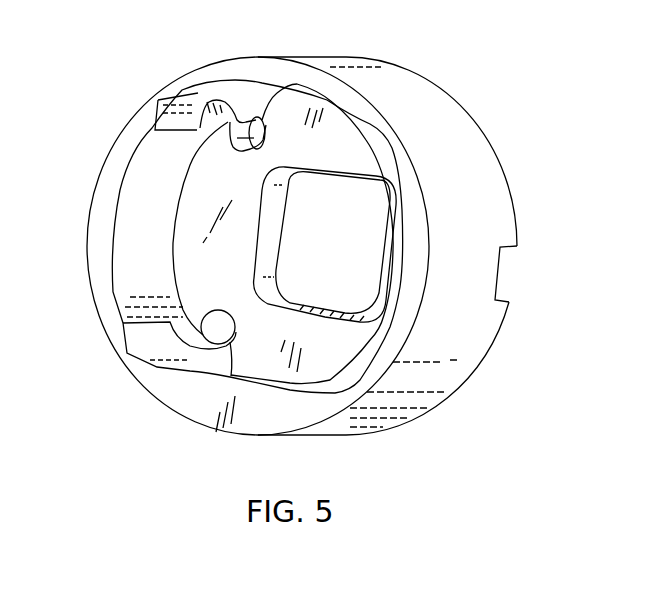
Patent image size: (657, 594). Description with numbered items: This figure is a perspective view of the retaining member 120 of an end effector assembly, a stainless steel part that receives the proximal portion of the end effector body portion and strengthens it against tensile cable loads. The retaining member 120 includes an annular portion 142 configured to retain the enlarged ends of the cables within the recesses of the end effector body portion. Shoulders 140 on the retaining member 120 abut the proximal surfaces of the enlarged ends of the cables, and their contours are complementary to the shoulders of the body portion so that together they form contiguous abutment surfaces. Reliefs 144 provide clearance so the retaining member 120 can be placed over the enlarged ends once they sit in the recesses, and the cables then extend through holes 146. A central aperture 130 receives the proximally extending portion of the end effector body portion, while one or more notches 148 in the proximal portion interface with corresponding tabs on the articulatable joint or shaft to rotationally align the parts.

The retaining member 120 is at (503, 52).
The aperture 130 is at (360, 220).
The shoulders 140 is at (226, 105).
The annular portion 142 is at (132, 228).
The reliefs 144 is at (163, 122).
The holes 146 is at (257, 117).
The notches 148 is at (502, 277).